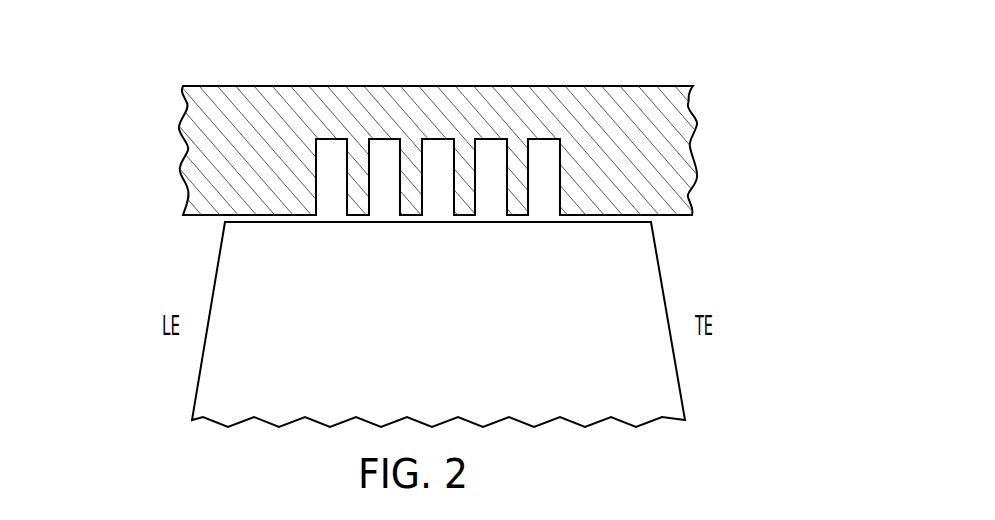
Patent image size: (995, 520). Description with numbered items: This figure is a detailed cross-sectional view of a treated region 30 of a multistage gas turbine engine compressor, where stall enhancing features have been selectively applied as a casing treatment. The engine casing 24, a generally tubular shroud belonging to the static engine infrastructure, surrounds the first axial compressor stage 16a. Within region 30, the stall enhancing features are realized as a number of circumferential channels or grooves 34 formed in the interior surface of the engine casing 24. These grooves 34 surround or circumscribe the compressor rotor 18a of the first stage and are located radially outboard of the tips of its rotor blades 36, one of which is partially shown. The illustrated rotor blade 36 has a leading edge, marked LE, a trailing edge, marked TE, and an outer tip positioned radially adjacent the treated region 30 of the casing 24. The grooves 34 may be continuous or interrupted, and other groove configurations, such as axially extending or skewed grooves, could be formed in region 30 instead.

The first axial compressor stage 16a is at (138, 146).
The compressor rotor 18a is at (388, 324).
The engine casing 24 is at (203, 96).
The treated region 30 is at (572, 58).
The circumferential grooves 34 is at (330, 148).
The rotor blade 36 is at (456, 310).